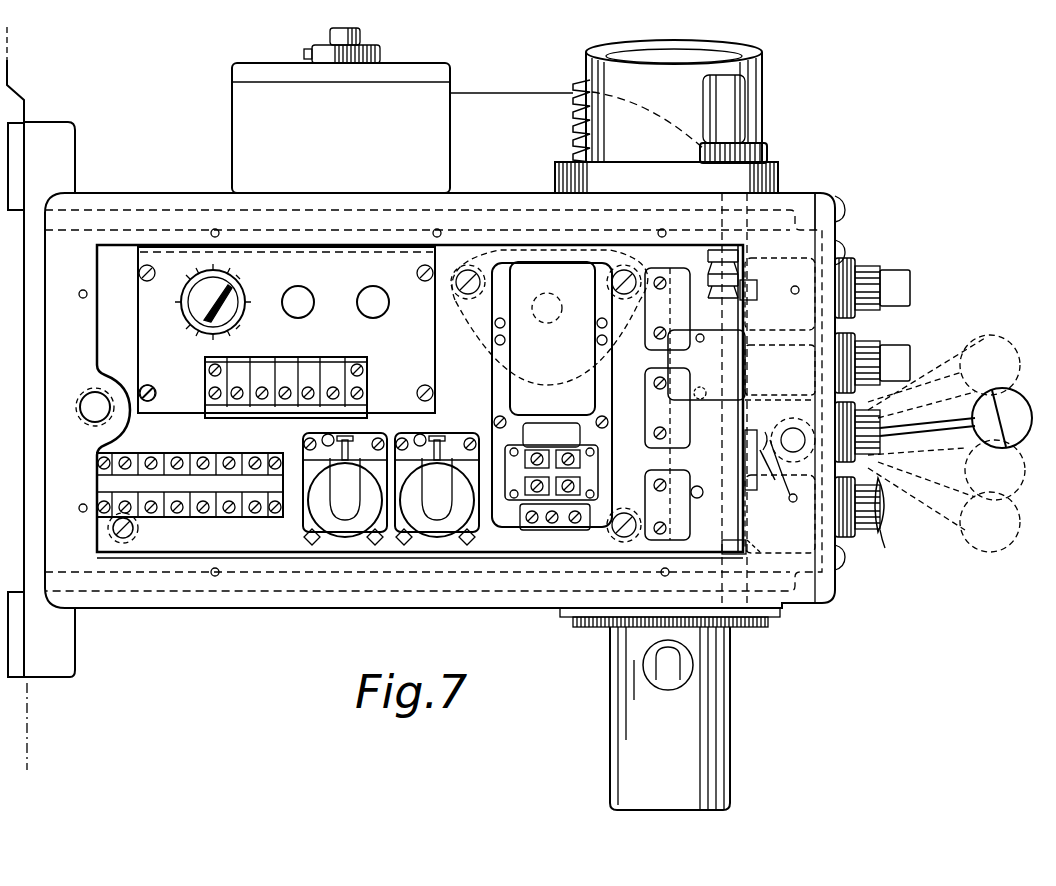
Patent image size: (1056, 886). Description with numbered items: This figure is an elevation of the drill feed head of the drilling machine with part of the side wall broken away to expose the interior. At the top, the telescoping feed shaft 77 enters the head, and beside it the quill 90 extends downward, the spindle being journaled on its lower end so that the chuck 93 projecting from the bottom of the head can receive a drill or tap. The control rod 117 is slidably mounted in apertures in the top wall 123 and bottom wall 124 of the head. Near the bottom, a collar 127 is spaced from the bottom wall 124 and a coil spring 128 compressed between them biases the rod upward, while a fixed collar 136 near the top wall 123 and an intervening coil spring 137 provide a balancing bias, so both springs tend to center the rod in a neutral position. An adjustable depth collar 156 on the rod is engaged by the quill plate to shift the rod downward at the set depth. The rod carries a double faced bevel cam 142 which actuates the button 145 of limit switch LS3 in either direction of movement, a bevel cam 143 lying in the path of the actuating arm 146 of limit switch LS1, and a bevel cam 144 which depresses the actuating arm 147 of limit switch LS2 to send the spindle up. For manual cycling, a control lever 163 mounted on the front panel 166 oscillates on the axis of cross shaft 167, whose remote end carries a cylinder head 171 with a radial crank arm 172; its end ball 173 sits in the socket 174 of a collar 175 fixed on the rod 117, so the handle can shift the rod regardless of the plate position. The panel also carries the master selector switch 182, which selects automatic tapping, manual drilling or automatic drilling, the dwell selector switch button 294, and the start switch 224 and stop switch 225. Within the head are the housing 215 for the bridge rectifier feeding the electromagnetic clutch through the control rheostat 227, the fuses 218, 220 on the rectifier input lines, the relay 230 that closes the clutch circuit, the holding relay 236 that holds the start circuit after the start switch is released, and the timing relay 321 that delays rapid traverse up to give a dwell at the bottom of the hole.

The feed shaft 77 is at (332, 40).
The quill 90 is at (752, 76).
The control rod 117 is at (748, 106).
The depth collar 156 is at (765, 148).
The top wall 123 is at (778, 200).
The front panel 166 is at (828, 229).
The master selector switch 182 is at (912, 283).
The dwell selector switch button 294 is at (910, 340).
The control lever 163 is at (1012, 398).
The coil spring 137 is at (710, 265).
The fixed collar 136 is at (757, 288).
The bevel cam 144 is at (756, 305).
The actuating arm 147 is at (711, 346).
The actuating arm 146 is at (710, 381).
The bevel cam 143 is at (752, 393).
The cylinder head 171 is at (780, 395).
The cross shaft 167 is at (792, 434).
The radial crank arm 172 is at (775, 437).
The collar 175 is at (745, 452).
The actuating button 145 is at (709, 481).
The socket 174 is at (771, 474).
The end ball 173 is at (787, 476).
The double faced bevel cam 142 is at (762, 517).
The start switch 224 is at (888, 500).
The stop switch 225 is at (886, 545).
The coil spring 128 is at (724, 556).
The collar 127 is at (755, 548).
The bottom wall 124 is at (792, 600).
The chuck 93 is at (720, 668).
The housing 215 is at (426, 380).
The control rheostat 227 is at (238, 290).
The fuse 220 is at (305, 296).
The fuse 218 is at (380, 296).
The relay 230 is at (345, 489).
The holding relay 236 is at (437, 489).
The timing relay 321 is at (551, 476).
The limit switch LS2 is at (650, 318).
The limit switch LS1 is at (652, 412).
The limit switch LS3 is at (652, 505).